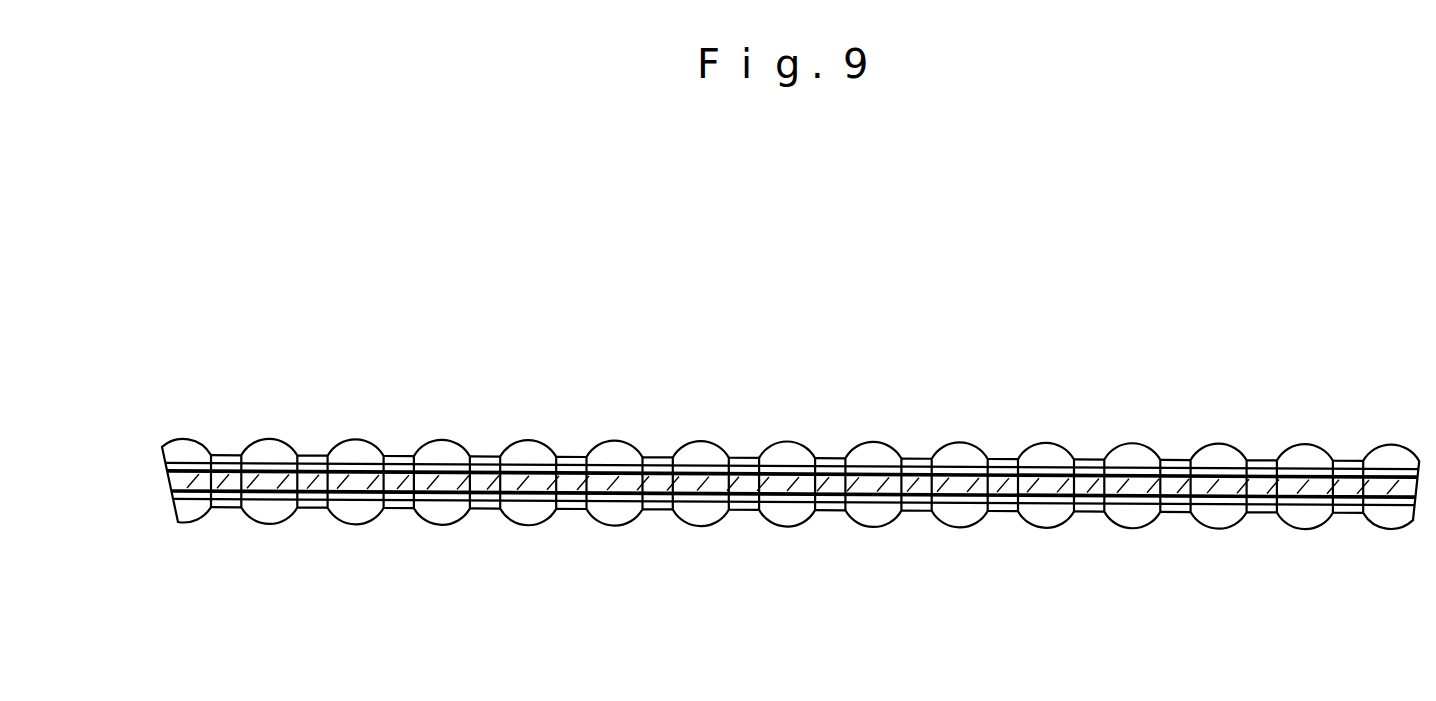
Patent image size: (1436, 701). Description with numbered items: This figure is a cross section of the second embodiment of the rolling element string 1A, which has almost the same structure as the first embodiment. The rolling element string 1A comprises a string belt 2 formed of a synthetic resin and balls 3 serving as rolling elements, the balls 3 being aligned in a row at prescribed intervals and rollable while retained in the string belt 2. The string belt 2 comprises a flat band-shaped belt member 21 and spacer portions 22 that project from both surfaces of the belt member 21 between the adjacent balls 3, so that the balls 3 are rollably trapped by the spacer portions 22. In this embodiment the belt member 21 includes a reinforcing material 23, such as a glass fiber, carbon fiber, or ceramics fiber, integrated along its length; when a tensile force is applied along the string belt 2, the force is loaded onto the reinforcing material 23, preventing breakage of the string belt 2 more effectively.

The rolling element string 1A is at (1252, 382).
The string belt 2 is at (395, 453).
The ball 3 is at (785, 453).
The belt member 21 is at (997, 457).
The spacer portion 22 is at (913, 460).
The reinforcing material 23 is at (480, 477).